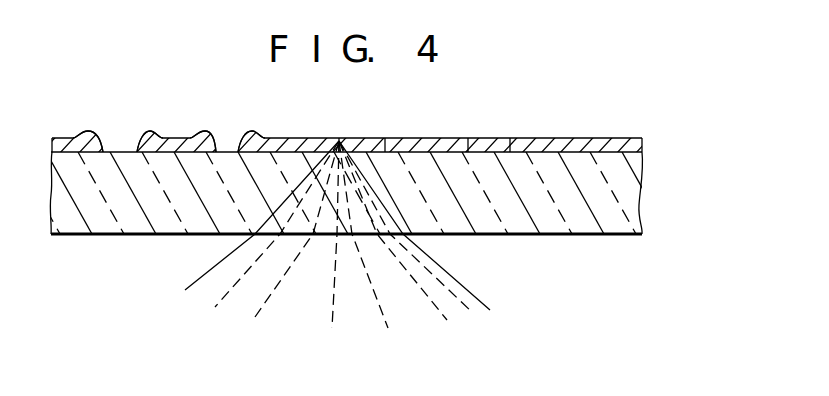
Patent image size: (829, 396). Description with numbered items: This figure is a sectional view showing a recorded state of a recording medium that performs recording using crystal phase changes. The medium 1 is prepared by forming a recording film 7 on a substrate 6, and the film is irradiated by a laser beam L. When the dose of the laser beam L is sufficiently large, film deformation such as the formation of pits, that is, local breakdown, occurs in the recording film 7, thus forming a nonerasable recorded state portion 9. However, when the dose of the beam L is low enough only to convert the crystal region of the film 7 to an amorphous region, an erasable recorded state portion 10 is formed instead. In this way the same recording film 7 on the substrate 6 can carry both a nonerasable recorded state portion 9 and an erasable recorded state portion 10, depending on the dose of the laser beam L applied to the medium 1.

The medium 1 is at (643, 173).
The substrate 6 is at (590, 234).
The recording film 7 is at (593, 138).
The nonerasable recorded state portion 9 is at (120, 143).
The erasable recorded state portion 10 is at (365, 137).
The laser beam L is at (420, 307).